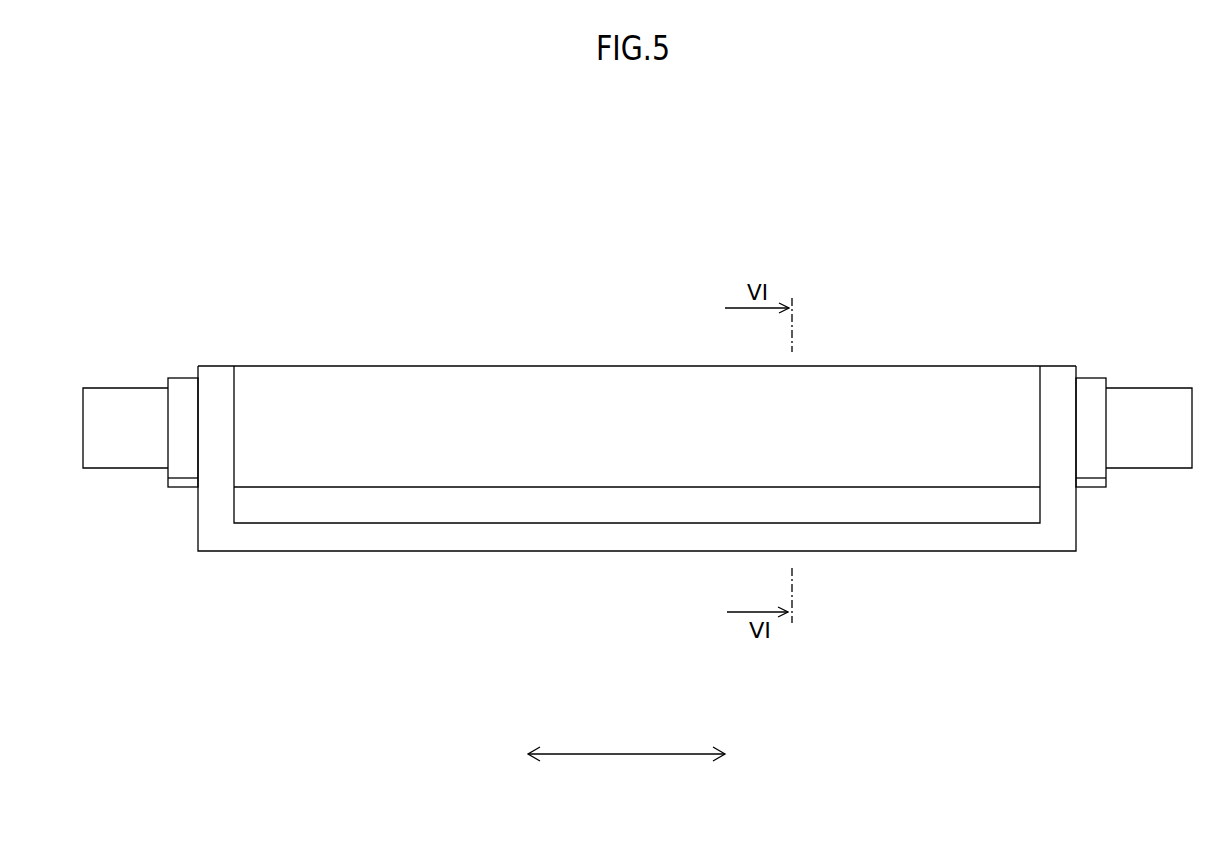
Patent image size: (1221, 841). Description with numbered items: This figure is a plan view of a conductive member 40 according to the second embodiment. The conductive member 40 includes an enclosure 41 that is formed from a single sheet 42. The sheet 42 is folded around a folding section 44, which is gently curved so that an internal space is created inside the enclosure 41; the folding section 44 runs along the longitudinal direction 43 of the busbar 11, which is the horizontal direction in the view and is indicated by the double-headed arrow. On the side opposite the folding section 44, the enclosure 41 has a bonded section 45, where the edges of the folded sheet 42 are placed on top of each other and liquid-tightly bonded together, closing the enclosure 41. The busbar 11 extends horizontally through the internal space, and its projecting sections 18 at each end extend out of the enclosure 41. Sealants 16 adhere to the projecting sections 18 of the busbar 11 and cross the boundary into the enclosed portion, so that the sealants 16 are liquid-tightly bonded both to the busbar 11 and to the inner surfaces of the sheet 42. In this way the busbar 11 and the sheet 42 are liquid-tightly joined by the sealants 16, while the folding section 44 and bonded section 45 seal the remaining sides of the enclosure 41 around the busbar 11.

The busbar 11 is at (1121, 397).
The sealants 16 is at (185, 392).
The projecting sections 18 is at (122, 398).
The conductive member 40 is at (845, 318).
The enclosure 41 is at (451, 378).
The sheet 42 is at (560, 410).
The longitudinal direction 43 is at (627, 755).
The folding section 44 is at (933, 366).
The bonded section 45 is at (218, 465).